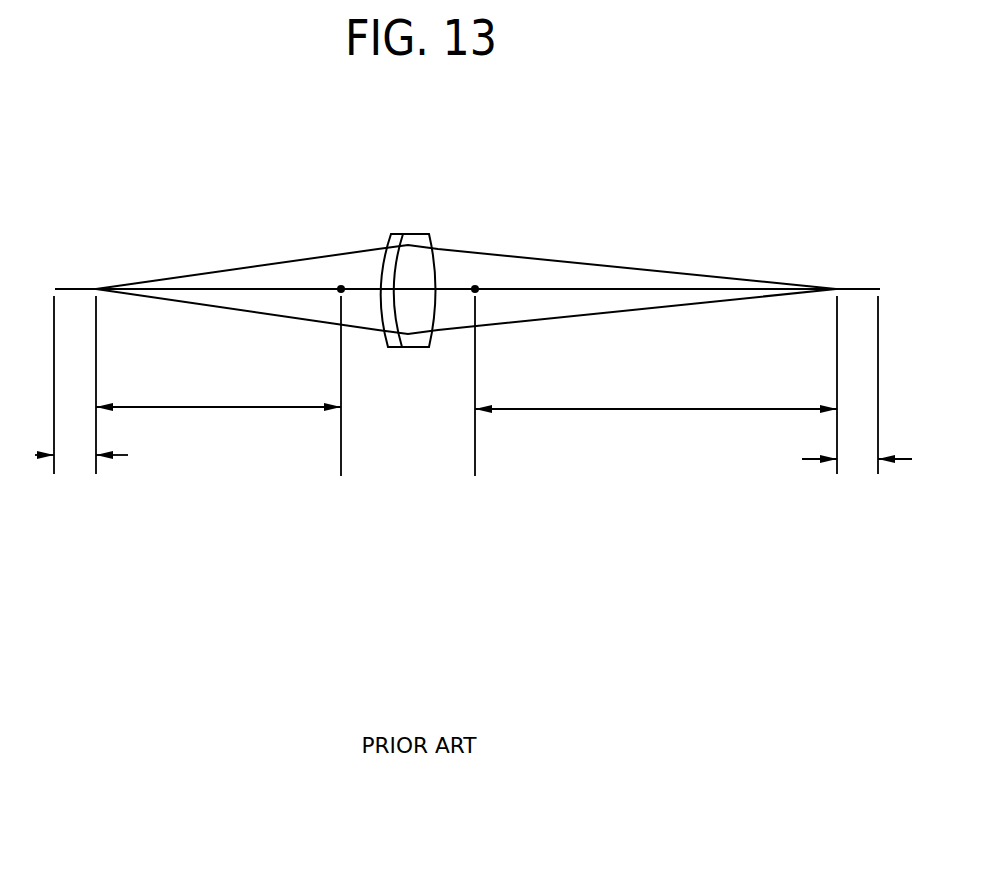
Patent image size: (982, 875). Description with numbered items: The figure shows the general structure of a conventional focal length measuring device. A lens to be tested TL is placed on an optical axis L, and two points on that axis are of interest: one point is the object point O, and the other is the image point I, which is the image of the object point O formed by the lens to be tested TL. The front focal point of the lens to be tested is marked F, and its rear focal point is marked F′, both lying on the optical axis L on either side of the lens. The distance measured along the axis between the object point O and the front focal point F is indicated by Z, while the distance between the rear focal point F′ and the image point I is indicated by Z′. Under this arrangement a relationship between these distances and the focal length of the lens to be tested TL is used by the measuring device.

The object point O is at (79, 362).
The image point I is at (857, 361).
The optical axis L is at (530, 289).
The lens to be tested TL is at (408, 269).
The front focal point F is at (342, 363).
The rear focal point F′ is at (477, 363).
The distance between O and F Z is at (218, 388).
The distance between F' and I Z′ is at (656, 389).